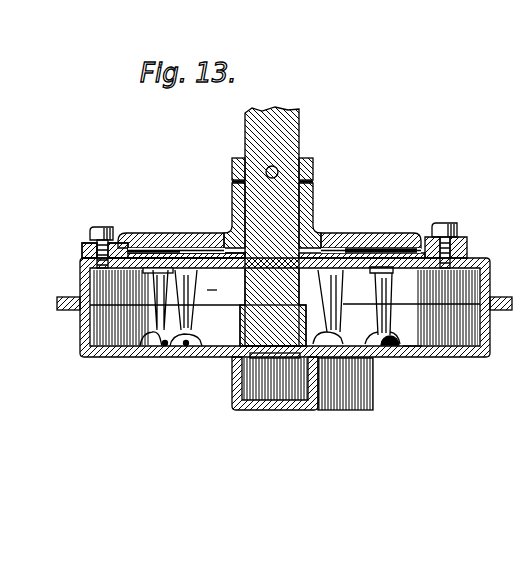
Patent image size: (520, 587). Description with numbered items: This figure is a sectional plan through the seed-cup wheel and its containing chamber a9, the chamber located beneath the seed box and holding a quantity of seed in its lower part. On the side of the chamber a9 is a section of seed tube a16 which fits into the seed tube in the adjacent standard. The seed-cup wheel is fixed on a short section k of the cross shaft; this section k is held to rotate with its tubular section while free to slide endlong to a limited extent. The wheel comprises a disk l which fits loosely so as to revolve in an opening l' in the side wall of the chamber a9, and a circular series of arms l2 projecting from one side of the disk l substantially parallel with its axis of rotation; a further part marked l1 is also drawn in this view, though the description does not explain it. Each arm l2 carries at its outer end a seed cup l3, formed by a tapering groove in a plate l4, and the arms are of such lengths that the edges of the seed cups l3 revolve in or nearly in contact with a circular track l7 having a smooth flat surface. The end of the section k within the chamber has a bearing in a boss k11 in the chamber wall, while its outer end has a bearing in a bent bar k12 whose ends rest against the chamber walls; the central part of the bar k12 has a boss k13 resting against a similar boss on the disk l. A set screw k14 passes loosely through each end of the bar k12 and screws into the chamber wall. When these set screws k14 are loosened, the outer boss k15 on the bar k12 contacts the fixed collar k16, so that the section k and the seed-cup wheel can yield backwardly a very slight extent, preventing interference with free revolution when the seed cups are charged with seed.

The short shaft section k is at (245, 141).
The fixed collar k16 is at (317, 171).
The outer boss k15 is at (317, 201).
The set screw k14 is at (108, 206).
The boss k13 is at (347, 253).
The bent bar k12 is at (163, 236).
The boss k11 is at (232, 337).
The disk l is at (285, 282).
The opening l' is at (277, 333).
The casing partition l1 is at (217, 287).
The arms l2 is at (190, 313).
The seed cup l3 is at (188, 346).
The plate l4 is at (168, 343).
The circular track l7 is at (412, 348).
The chamber a9 is at (152, 336).
The section of seed tube a16 is at (272, 396).